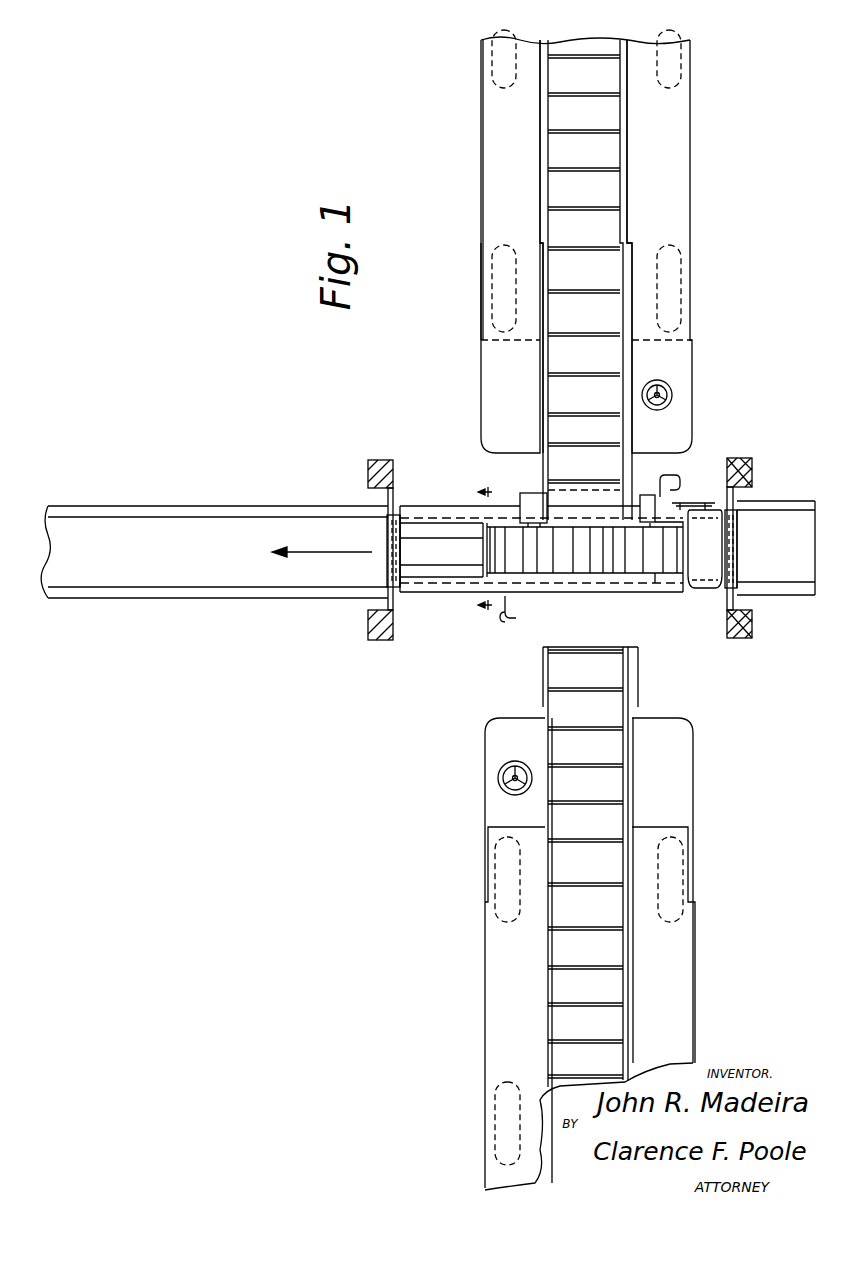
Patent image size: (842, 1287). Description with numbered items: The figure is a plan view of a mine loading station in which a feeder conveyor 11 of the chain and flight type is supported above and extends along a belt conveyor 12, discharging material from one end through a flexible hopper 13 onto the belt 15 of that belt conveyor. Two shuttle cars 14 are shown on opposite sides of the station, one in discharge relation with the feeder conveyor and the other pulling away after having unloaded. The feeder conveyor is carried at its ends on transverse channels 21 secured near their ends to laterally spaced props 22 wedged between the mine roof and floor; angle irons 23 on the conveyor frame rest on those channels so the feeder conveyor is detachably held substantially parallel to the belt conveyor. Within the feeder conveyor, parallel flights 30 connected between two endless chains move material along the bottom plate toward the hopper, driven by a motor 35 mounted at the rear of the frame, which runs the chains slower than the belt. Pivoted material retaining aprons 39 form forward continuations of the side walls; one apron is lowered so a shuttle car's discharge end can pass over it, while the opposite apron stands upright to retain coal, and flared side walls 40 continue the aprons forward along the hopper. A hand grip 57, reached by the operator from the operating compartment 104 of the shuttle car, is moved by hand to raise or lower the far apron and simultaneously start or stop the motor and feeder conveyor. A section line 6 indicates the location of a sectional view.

The section line / viewing direction 6 is at (472, 546).
The feeder conveyor 11 is at (653, 597).
The belt conveyor 12 is at (233, 597).
The flexible hopper 13 is at (433, 530).
The shuttle car 14 is at (690, 357).
The belt 15 is at (243, 522).
The transverse channel 21 is at (387, 604).
The prop 22 is at (380, 458).
The angle iron 23 is at (387, 540).
The flight 30 is at (560, 532).
The motor 35 is at (718, 558).
The material retaining apron 39 is at (520, 497).
The side wall 40 is at (413, 511).
The hand grip 57 is at (672, 491).
The operating compartment 104 is at (690, 418).